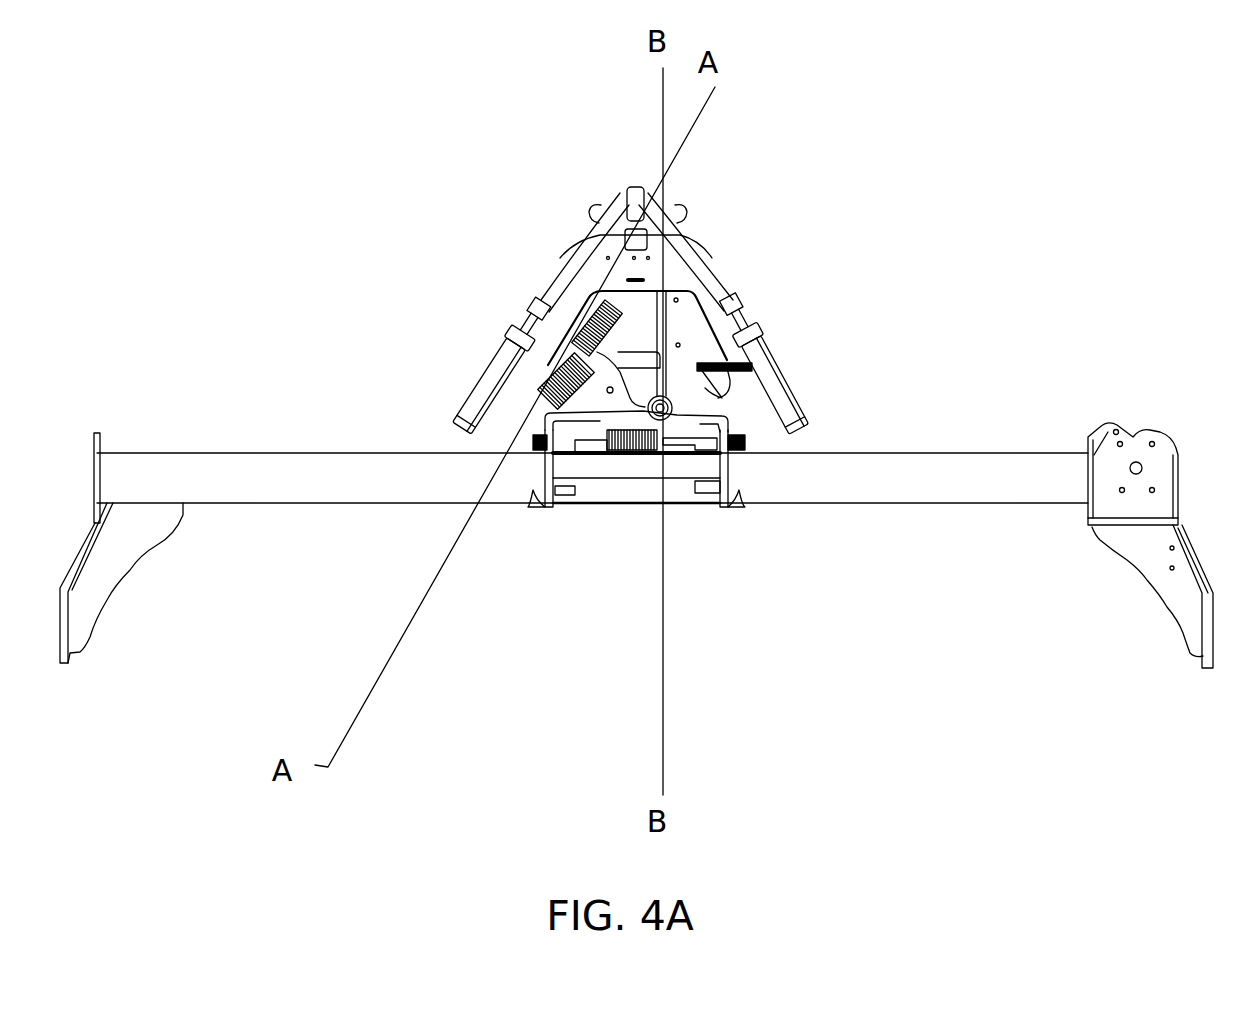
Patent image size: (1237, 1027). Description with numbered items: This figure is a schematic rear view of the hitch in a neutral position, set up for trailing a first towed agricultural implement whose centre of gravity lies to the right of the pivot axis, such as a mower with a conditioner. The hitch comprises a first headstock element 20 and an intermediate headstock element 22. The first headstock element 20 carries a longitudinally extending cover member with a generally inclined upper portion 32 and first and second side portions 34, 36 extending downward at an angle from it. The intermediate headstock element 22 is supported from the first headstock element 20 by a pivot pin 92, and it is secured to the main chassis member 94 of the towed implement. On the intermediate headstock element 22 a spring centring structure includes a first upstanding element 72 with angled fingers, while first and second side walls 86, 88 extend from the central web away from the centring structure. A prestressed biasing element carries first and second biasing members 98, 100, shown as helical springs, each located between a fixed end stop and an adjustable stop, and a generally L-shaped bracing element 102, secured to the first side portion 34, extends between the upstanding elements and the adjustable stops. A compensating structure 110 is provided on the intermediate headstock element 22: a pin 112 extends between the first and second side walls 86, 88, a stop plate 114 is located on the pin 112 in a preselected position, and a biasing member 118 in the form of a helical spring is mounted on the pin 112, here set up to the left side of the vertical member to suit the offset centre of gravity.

The first headstock element 20 is at (713, 262).
The intermediate headstock element 22 is at (738, 520).
The upper portion 32 is at (697, 243).
The first side portion 34 is at (577, 310).
The second side portion 36 is at (720, 290).
The first upstanding element 72 is at (543, 417).
The first side wall 86 is at (540, 480).
The second side wall 88 is at (732, 480).
The pivot pin 92 is at (697, 368).
The main chassis member 94 is at (997, 470).
The first biasing member 98 is at (590, 345).
The second biasing member 100 is at (548, 370).
The bracing element 102 is at (638, 348).
The compensating structure 110 is at (745, 445).
The pin 112 is at (583, 440).
The stop plate 114 is at (603, 467).
The biasing member 118 is at (637, 458).